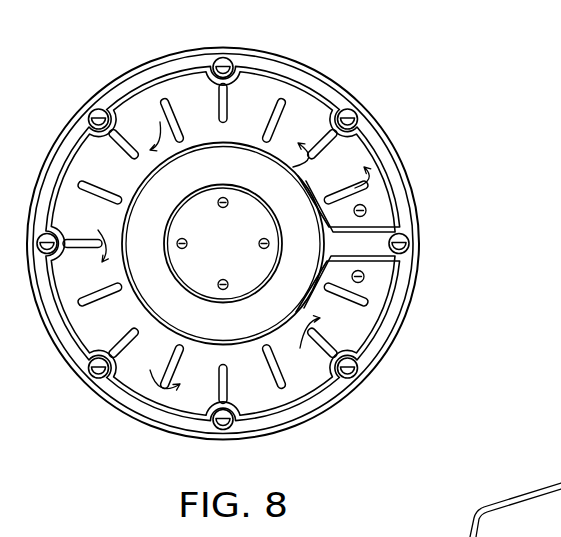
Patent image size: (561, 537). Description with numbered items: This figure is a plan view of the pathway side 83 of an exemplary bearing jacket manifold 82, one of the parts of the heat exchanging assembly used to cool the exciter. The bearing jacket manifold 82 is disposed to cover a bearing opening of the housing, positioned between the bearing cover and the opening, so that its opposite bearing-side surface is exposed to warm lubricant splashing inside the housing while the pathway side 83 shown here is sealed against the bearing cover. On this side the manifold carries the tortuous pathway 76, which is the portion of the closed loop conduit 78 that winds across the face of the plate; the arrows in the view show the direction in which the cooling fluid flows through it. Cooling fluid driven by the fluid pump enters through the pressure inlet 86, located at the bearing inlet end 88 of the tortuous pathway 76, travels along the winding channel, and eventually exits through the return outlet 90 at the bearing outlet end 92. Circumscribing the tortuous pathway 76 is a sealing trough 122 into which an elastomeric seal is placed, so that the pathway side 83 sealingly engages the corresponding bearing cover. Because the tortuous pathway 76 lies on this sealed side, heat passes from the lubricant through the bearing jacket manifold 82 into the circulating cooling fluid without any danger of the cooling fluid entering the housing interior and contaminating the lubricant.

The tortuous pathway 76 is at (257, 100).
The closed loop conduit 78 is at (358, 328).
The bearing jacket manifold 82 is at (357, 77).
The pathway side 83 is at (112, 174).
The pressure inlet 86 is at (338, 213).
The bearing inlet end 88 is at (380, 210).
The return outlet 90 is at (387, 267).
The bearing outlet end 92 is at (382, 275).
The sealing trough 122 is at (377, 152).